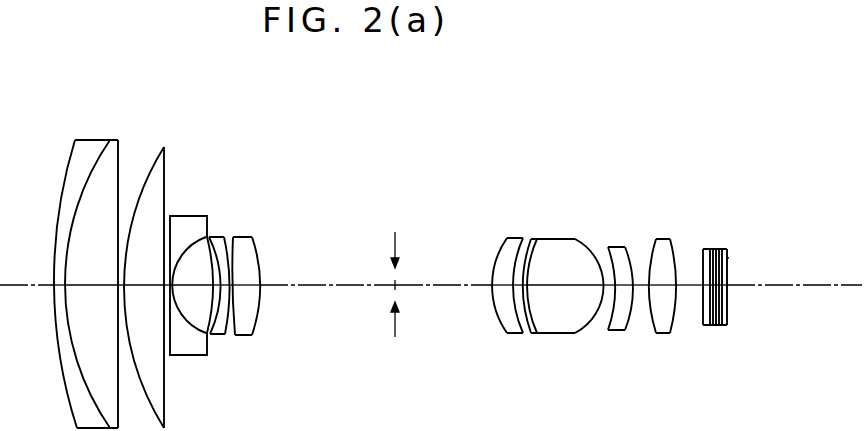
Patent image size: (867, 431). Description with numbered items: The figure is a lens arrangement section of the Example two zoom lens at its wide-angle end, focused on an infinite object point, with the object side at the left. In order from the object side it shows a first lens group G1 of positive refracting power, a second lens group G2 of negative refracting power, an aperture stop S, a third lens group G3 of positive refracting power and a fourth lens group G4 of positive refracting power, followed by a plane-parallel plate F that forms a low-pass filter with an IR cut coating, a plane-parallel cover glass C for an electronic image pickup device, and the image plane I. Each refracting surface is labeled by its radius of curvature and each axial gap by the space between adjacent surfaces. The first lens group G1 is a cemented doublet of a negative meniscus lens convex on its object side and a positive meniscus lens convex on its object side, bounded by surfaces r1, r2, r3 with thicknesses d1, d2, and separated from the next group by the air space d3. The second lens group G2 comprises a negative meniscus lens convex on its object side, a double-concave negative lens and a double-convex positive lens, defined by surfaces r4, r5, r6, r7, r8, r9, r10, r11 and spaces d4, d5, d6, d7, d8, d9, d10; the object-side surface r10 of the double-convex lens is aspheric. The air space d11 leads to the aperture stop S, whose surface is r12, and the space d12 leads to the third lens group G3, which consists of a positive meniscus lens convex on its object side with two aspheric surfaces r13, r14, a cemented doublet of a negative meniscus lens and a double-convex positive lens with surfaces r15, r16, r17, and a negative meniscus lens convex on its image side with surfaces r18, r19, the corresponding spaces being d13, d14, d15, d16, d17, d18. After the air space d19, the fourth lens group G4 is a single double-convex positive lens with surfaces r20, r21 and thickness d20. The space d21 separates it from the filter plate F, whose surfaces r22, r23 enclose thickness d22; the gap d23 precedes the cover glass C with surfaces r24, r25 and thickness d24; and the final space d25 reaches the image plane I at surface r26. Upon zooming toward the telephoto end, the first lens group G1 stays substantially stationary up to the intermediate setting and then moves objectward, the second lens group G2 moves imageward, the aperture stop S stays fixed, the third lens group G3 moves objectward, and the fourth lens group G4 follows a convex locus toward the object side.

The lens surface radius of curvature r1 is at (63, 165).
The lens surface radius of curvature r2 is at (90, 163).
The lens surface radius of curvature r3 is at (127, 160).
The lens surface radius of curvature r4 is at (145, 168).
The lens surface radius of curvature r5 is at (172, 176).
The lens surface radius of curvature r6 is at (182, 217).
The lens surface radius of curvature r7 is at (199, 214).
The lens surface radius of curvature r8 is at (213, 233).
The lens surface radius of curvature r9 is at (228, 233).
The lens surface radius of curvature r10 is at (240, 233).
The lens surface radius of curvature r11 is at (258, 247).
The aperture stop surface r12 is at (391, 240).
The lens surface radius of curvature r13 is at (497, 247).
The lens surface radius of curvature r14 is at (513, 236).
The lens surface radius of curvature r15 is at (537, 238).
The lens surface radius of curvature r16 is at (558, 240).
The lens surface radius of curvature r17 is at (593, 243).
The lens surface radius of curvature r18 is at (610, 245).
The lens surface radius of curvature r19 is at (628, 243).
The lens surface radius of curvature r20 is at (650, 250).
The lens surface radius of curvature r21 is at (673, 238).
The plate surface radius of curvature r22 is at (702, 248).
The plate surface radius of curvature r23 is at (709, 248).
The plate surface radius of curvature r24 is at (718, 248).
The plate surface radius of curvature r25 is at (723, 252).
The image plane surface r26 is at (730, 256).
The space between adjacent lens surfaces d1 is at (57, 296).
The space between adjacent lens surfaces d2 is at (91, 301).
The space between adjacent lens surfaces d3 is at (133, 328).
The space between adjacent lens surfaces d4 is at (144, 301).
The space between adjacent lens surfaces d5 is at (166, 330).
The space between adjacent lens surfaces d6 is at (183, 327).
The space between adjacent lens surfaces d7 is at (201, 300).
The space between adjacent lens surfaces d8 is at (208, 322).
The space between adjacent lens surfaces d9 is at (226, 318).
The space between adjacent lens surfaces d10 is at (254, 330).
The space between adjacent lens surfaces d11 is at (327, 301).
The space between adjacent lens surfaces d12 is at (443, 302).
The space between adjacent lens surfaces d13 is at (498, 328).
The space between adjacent lens surfaces d14 is at (530, 333).
The space between adjacent lens surfaces d15 is at (550, 333).
The space between adjacent lens surfaces d16 is at (564, 304).
The space between adjacent lens surfaces d17 is at (603, 327).
The space between adjacent lens surfaces d18 is at (616, 333).
The space between adjacent lens surfaces d19 is at (642, 322).
The space between adjacent lens surfaces d20 is at (670, 333).
The space between adjacent lens surfaces d21 is at (691, 303).
The space between adjacent lens surfaces d22 is at (705, 322).
The space between adjacent lens surfaces d23 is at (716, 326).
The space between adjacent lens surfaces d24 is at (724, 330).
The space between adjacent lens surfaces d25 is at (727, 326).
The first lens group G1 is at (50, 82).
The second lens group G2 is at (168, 82).
The third lens group G3 is at (633, 82).
The fourth lens group G4 is at (645, 82).
The aperture stop S is at (384, 80).
The plane-parallel plate F is at (706, 330).
The cover glass C is at (720, 330).
The image plane I is at (728, 278).